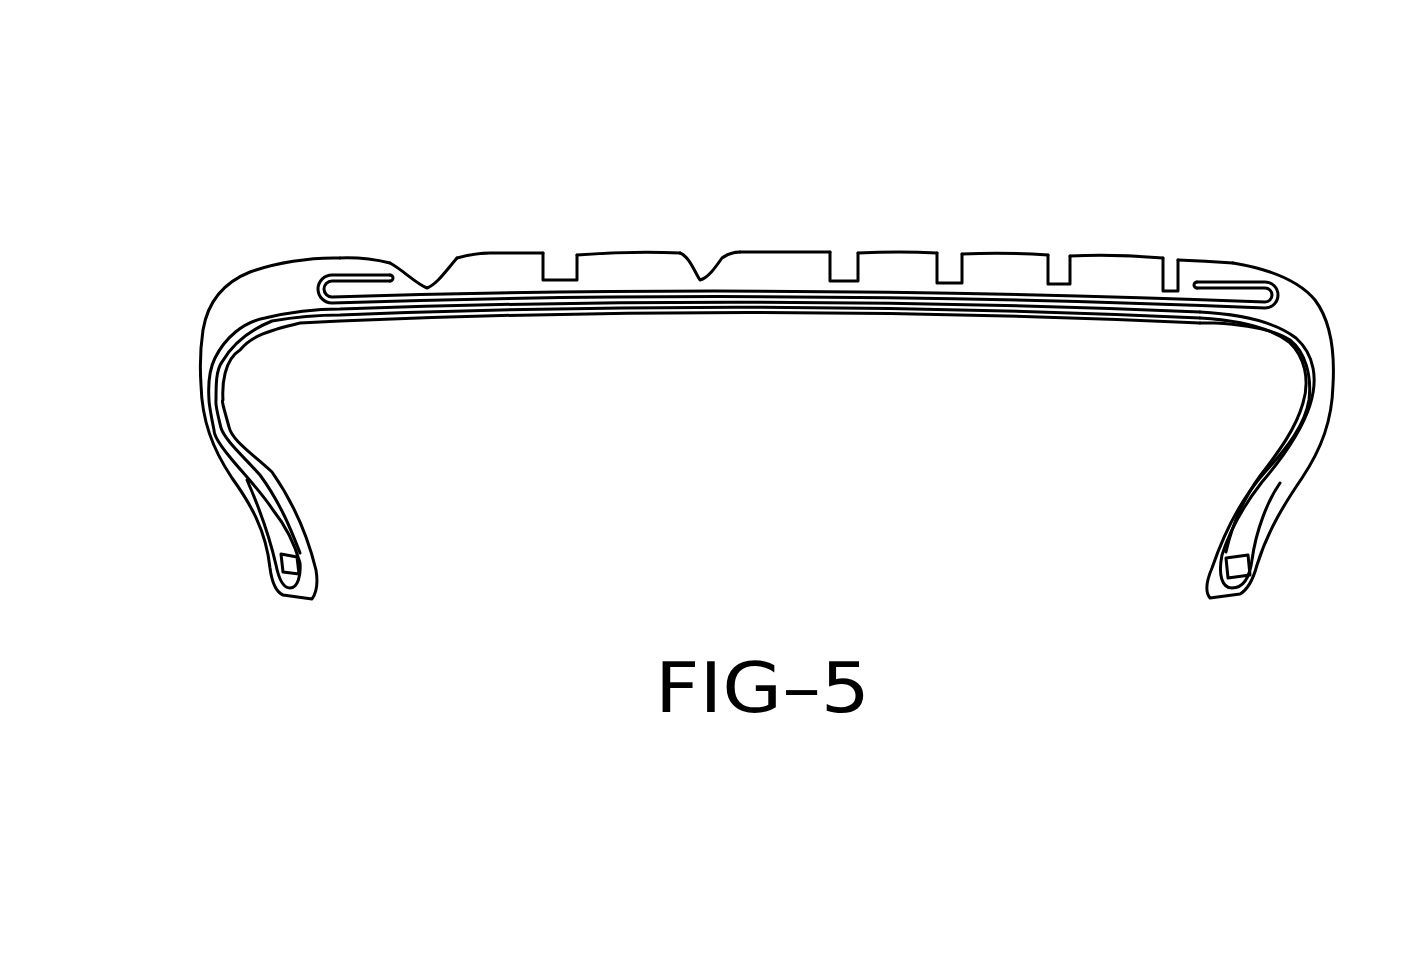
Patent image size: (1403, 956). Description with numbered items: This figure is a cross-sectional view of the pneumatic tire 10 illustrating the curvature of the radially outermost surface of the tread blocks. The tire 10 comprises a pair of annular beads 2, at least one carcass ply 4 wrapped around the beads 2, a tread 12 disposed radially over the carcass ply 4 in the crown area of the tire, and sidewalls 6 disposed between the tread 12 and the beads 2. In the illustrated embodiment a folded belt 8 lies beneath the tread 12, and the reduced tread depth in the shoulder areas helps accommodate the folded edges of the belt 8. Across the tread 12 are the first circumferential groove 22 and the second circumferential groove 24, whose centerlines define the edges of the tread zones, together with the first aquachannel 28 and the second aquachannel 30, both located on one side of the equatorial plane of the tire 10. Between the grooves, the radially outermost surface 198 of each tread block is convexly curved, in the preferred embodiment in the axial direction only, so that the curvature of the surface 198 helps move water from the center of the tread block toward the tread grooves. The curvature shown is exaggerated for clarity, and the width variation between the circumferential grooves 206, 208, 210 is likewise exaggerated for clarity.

The annular beads 2 is at (290, 567).
The carcass ply 4 is at (1282, 484).
The sidewalls 6 is at (207, 423).
The folded belt 8 is at (350, 277).
The tire 10 is at (1172, 140).
The tread 12 is at (494, 228).
The first circumferential groove 22 is at (846, 281).
The second circumferential groove 24 is at (560, 280).
The first aquachannel 28 is at (700, 280).
The second aquachannel 30 is at (427, 287).
The radially outermost surface 198 is at (625, 253).
The circumferential groove 206 is at (1170, 290).
The circumferential groove 208 is at (1058, 283).
The circumferential groove 210 is at (951, 282).